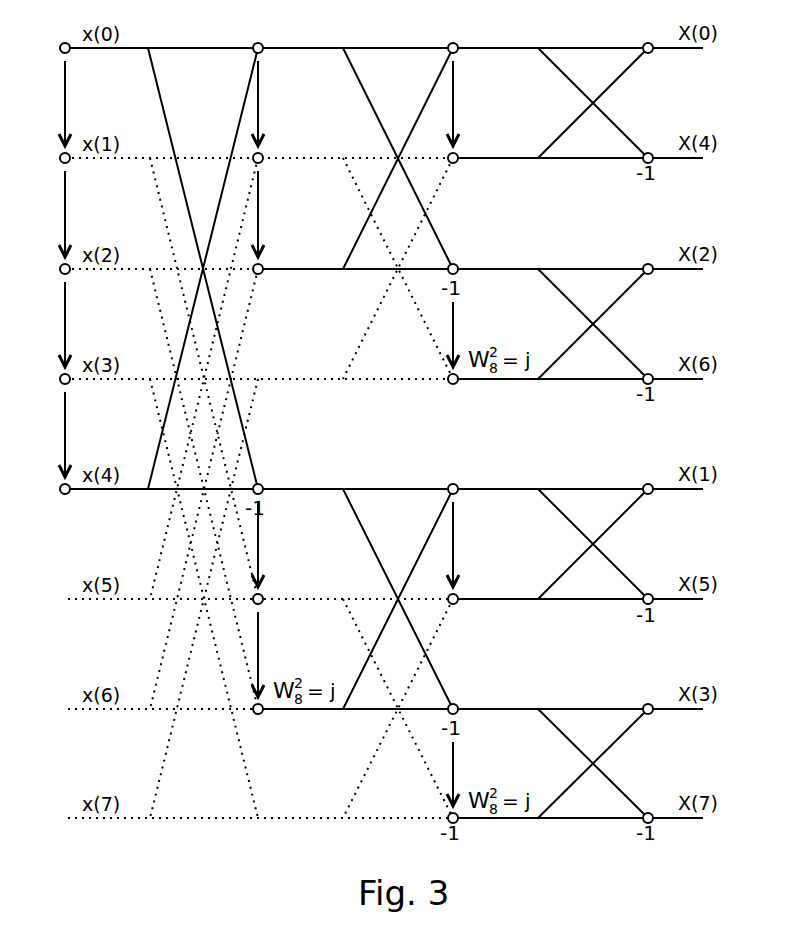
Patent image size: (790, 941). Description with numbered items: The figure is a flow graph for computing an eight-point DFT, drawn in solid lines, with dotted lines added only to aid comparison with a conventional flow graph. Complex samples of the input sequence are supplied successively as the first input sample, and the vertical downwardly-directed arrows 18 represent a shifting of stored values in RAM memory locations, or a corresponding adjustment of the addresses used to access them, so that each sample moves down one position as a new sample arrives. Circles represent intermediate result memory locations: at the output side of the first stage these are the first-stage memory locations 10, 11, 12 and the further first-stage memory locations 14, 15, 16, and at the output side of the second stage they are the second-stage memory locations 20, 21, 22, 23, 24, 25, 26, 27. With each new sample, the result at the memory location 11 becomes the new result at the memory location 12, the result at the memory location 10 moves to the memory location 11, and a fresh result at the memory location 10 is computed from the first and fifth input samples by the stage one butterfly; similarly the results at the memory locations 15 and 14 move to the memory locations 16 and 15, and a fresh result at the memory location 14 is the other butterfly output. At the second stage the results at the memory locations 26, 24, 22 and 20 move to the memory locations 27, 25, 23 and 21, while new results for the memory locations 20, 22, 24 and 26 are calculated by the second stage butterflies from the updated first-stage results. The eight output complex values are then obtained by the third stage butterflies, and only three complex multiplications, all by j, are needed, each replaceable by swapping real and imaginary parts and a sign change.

The vertical downwardly-directed arrows 18 is at (481, 759).
The intermediate result memory location m10 10 is at (281, 38).
The intermediate result memory location m11 11 is at (281, 148).
The intermediate result memory location m12 12 is at (281, 259).
The intermediate result memory location m14 14 is at (281, 479).
The intermediate result memory location m15 15 is at (281, 589).
The intermediate result memory location m16 16 is at (281, 718).
The intermediate result memory location m20 20 is at (476, 38).
The intermediate result memory location m21 21 is at (476, 148).
The intermediate result memory location m22 22 is at (476, 259).
The intermediate result memory location m23 23 is at (476, 388).
The intermediate result memory location m24 24 is at (476, 479).
The intermediate result memory location m25 25 is at (476, 589).
The intermediate result memory location m26 26 is at (476, 699).
The intermediate result memory location m27 27 is at (476, 827).